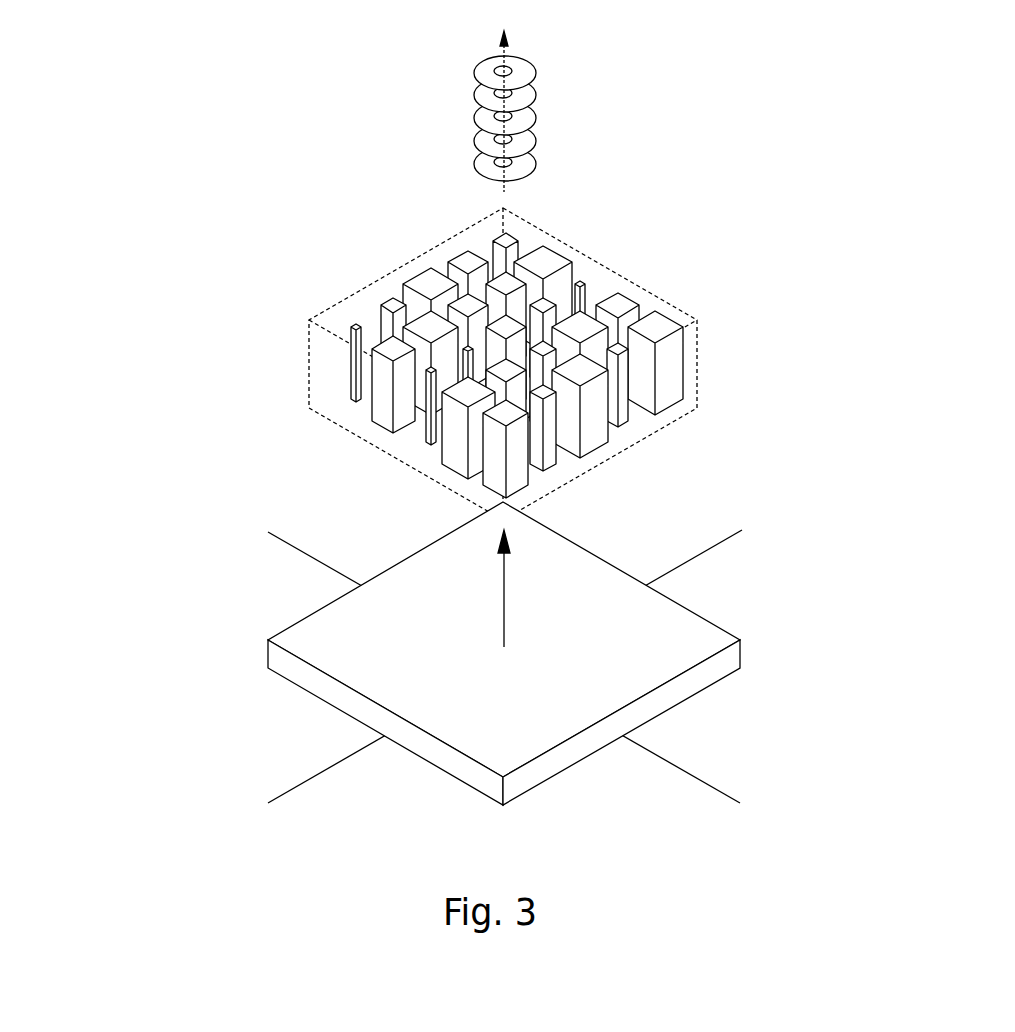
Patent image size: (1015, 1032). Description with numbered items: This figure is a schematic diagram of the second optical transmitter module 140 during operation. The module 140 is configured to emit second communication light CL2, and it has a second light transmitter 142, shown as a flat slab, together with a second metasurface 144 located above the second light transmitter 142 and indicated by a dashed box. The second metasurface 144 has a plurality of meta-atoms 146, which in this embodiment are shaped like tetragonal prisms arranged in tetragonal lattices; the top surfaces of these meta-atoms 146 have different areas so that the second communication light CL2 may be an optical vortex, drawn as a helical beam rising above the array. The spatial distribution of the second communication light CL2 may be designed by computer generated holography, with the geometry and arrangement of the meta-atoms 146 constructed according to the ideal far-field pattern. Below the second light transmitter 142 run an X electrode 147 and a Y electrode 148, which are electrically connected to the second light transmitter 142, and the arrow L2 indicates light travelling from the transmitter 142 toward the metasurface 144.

The second optical transmitter module 140 is at (997, 44).
The second light transmitter 142 is at (268, 660).
The second metasurface 144 is at (650, 292).
The meta-atoms 146 is at (490, 484).
The X electrode 147 is at (720, 543).
The Y electrode 148 is at (723, 792).
The second communication light CL2 is at (510, 186).
The scan direction L2 is at (500, 612).